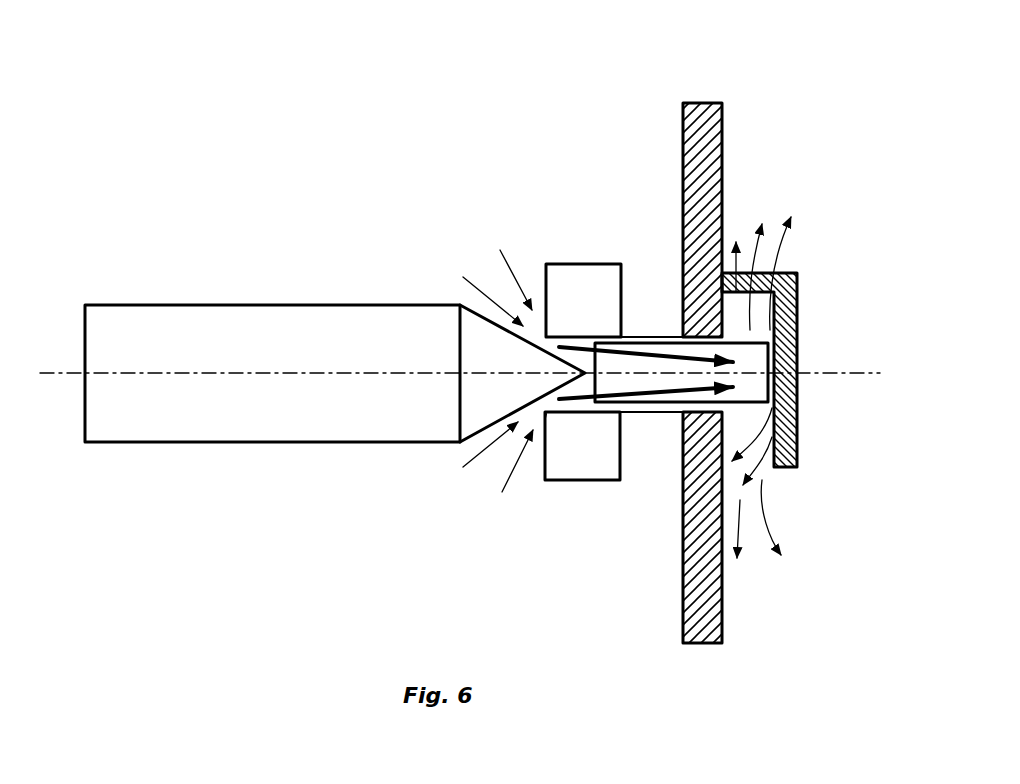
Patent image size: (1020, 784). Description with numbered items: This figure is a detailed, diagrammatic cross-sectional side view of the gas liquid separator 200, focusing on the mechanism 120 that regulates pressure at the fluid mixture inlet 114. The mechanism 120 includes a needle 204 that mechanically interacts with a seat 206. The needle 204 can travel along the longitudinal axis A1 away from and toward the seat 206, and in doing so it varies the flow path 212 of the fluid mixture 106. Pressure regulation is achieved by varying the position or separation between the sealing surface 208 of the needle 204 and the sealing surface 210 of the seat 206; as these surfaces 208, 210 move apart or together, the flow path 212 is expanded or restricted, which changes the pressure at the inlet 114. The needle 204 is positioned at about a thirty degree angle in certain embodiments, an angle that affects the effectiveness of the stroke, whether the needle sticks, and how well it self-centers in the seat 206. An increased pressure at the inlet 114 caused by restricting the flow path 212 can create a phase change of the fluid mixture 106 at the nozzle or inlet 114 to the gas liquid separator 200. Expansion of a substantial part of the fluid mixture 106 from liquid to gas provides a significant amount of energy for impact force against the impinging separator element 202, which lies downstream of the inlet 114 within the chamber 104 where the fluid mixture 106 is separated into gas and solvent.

The gas liquid separator 200 is at (400, 136).
The longitudinal axis A1 is at (62, 370).
The needle 204 is at (297, 443).
The sealing surface of the needle 208 is at (477, 345).
The flow path 212 is at (553, 335).
The seat 206 is at (580, 482).
The fluid mixture inlet 114 is at (697, 333).
The fluid mixture 106 is at (502, 295).
The mechanism 120 is at (484, 479).
The sealing surface of the seat 210 is at (545, 418).
The chamber 104 is at (722, 152).
The impinging separator element 202 is at (797, 308).